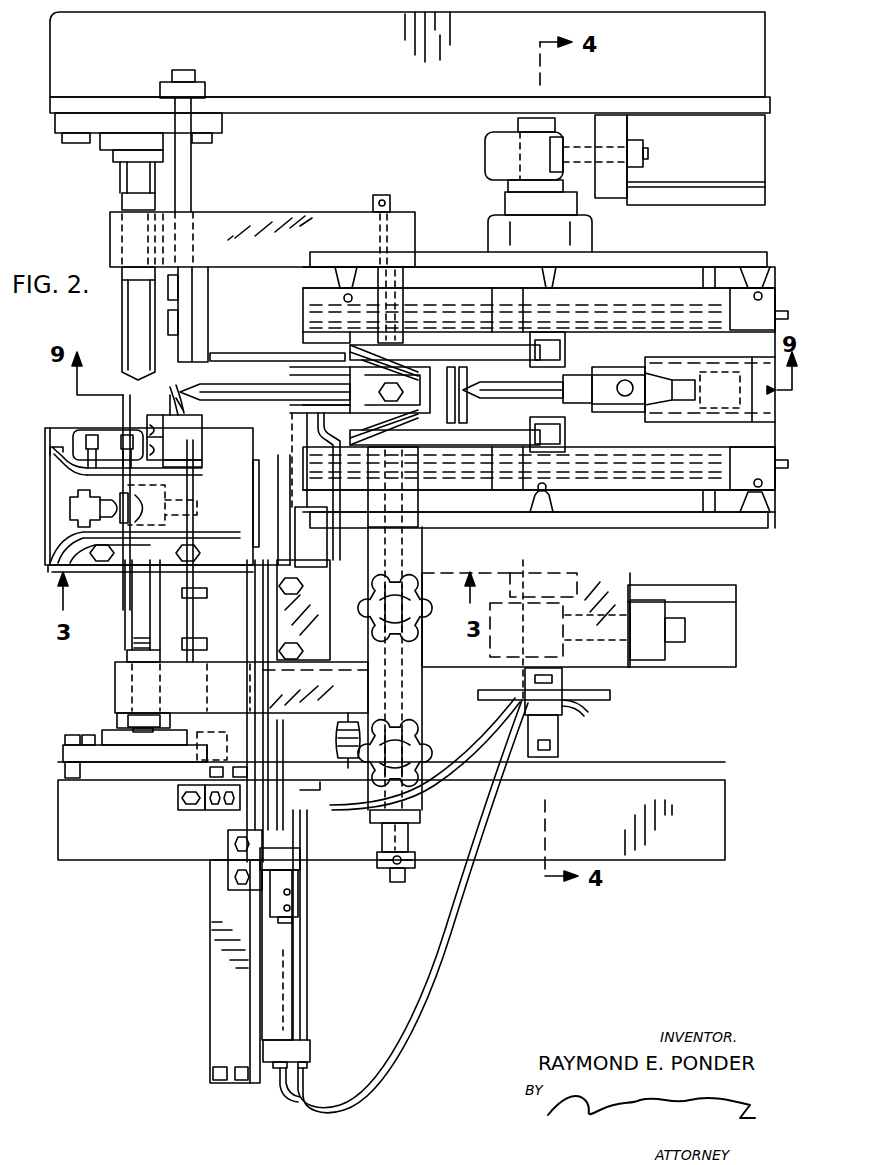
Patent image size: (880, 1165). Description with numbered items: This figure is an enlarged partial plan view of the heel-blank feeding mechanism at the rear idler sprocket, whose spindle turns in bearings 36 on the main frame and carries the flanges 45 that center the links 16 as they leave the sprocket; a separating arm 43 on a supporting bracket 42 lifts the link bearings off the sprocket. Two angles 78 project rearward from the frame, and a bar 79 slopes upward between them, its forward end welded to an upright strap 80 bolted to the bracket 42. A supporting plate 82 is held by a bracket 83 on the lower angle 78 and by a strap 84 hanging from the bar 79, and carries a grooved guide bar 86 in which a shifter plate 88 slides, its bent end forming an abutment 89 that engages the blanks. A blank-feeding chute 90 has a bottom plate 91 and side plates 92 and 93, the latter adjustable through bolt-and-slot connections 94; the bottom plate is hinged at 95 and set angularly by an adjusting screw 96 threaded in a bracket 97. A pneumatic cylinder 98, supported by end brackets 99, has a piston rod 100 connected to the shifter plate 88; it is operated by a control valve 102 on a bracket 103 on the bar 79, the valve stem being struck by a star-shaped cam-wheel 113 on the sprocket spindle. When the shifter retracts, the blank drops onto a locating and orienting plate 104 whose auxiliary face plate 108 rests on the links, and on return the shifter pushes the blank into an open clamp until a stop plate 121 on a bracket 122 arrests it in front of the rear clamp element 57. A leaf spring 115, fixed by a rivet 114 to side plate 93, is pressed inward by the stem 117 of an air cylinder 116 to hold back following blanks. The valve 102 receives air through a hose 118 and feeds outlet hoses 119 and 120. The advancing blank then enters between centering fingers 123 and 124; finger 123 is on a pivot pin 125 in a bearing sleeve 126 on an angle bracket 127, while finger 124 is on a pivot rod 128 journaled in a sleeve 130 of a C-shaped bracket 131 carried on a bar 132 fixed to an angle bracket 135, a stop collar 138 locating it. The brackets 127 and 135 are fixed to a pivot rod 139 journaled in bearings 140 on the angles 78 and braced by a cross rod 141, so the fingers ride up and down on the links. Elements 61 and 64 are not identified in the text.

The link 16 is at (612, 352).
The bearing 36 is at (485, 150).
The supporting bracket 42 is at (736, 632).
The separating arm 43 is at (790, 306).
The flange 45 is at (688, 528).
The rear clamp element 57 is at (690, 390).
The housing 61 is at (712, 420).
The tapered rod 64 is at (195, 391).
The angle 78 is at (50, 68).
The bar 79 is at (450, 670).
The upright strap 80 is at (665, 612).
The supporting plate 82 is at (210, 982).
The bracket 83 is at (212, 822).
The strap 84 is at (258, 616).
The guide bar 86 is at (303, 541).
The shifter plate 88 is at (290, 493).
The abutment 89 is at (312, 440).
The blank-feeding chute 90 is at (48, 578).
The bottom plate 91 is at (47, 516).
The side plate 92 is at (118, 550).
The side plate 93 is at (86, 440).
The bolt-and-slot connection 94 is at (121, 440).
The hinge 95 is at (253, 512).
The adjusting screw 96 is at (182, 503).
The bracket 97 is at (180, 605).
The pneumatic cylinder 98 is at (297, 968).
The end bracket 99 is at (310, 1050).
The piston rod 100 is at (280, 750).
The control valve 102 is at (558, 718).
The bracket 103 is at (525, 676).
The locating and orienting plate 104 is at (365, 583).
The auxiliary face plate 108 is at (352, 570).
The star-shaped cam-wheel 113 is at (600, 698).
The rivet 114 is at (56, 466).
The leaf spring 115 is at (182, 476).
The air cylinder 116 is at (202, 424).
The stem 117 is at (202, 464).
The hose 118 is at (588, 712).
The outlet hose 119 is at (172, 394).
The outlet hose 120 is at (430, 922).
The stop plate 121 is at (245, 353).
The bracket 122 is at (188, 192).
The centering finger 123 is at (485, 352).
The centering finger 124 is at (432, 432).
The pivot pin 125 is at (412, 228).
The bearing sleeve 126 is at (417, 240).
The angle bracket 127 is at (333, 214).
The pivot rod 128 is at (397, 882).
The sleeve 130 is at (408, 846).
The C-shaped bracket 131 is at (420, 812).
The bar 132 is at (418, 730).
The angle bracket 135 is at (117, 692).
The stop collar 138 is at (382, 870).
The pivot rod 139 is at (125, 618).
The bearing 140 is at (113, 160).
The cross rod 141 is at (127, 640).